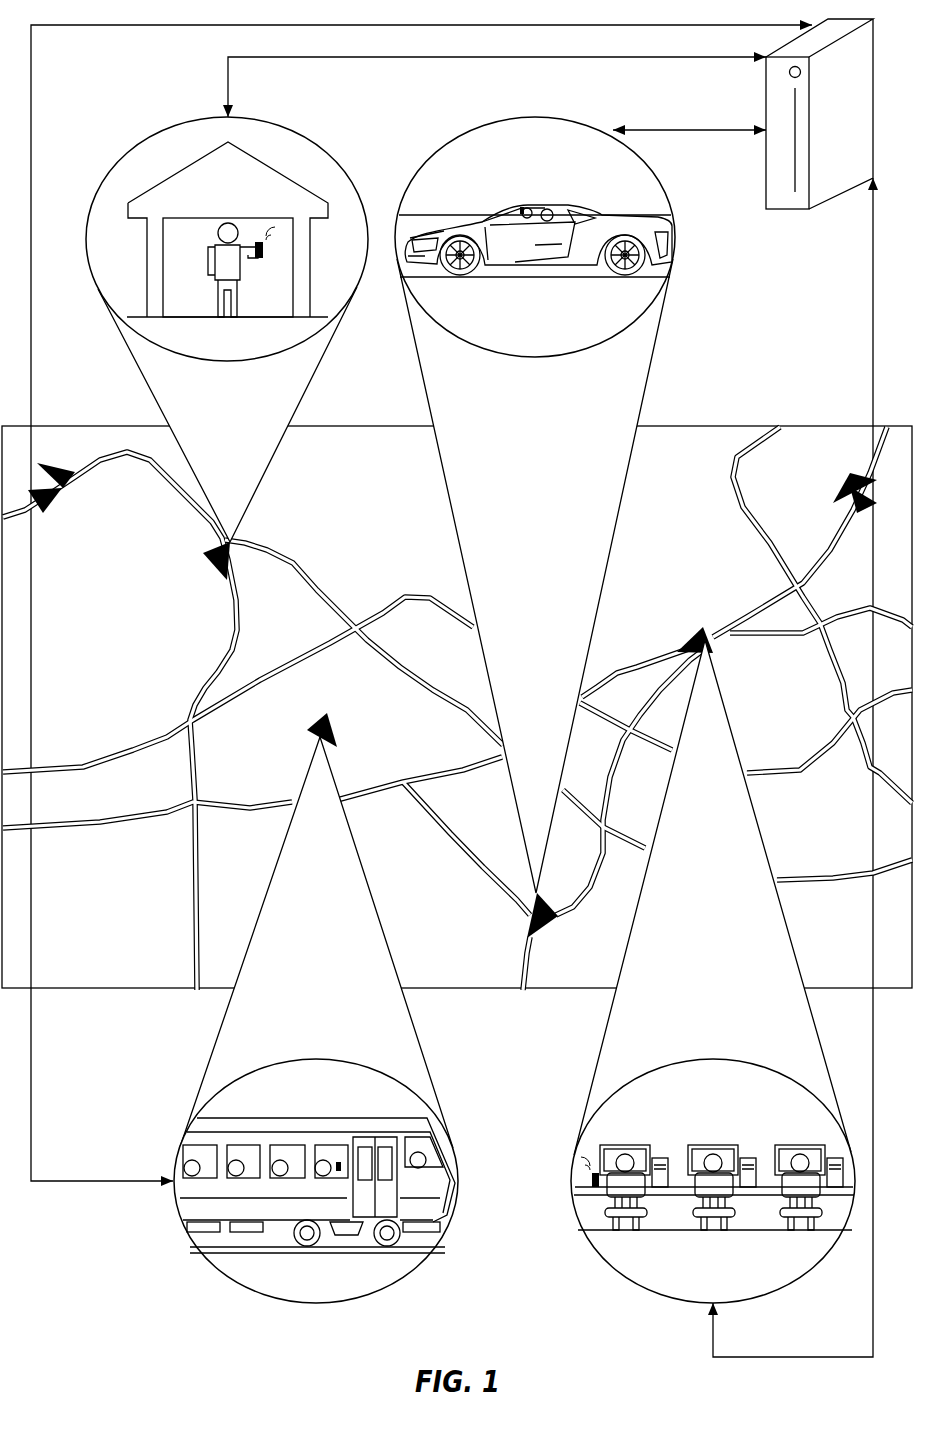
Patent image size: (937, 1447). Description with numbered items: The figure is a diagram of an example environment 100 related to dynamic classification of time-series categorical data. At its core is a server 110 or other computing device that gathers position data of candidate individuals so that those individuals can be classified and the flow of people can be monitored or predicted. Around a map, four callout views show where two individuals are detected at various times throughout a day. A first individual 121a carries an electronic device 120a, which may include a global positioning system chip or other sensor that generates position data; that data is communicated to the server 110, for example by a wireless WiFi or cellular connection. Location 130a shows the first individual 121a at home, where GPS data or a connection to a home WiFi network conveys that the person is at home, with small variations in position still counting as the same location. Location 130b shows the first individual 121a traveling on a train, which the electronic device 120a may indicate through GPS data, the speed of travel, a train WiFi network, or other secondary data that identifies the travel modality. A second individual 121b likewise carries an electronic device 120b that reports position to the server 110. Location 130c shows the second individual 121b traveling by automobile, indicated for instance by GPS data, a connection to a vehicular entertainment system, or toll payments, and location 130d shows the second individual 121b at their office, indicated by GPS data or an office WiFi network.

The environment 100 is at (115, 1319).
The server 110 is at (807, 209).
The electronic device 120a is at (262, 250).
The first individual 121a is at (210, 258).
The electronic device 120b is at (532, 205).
The second individual 121b is at (560, 209).
The location 130a is at (333, 150).
The location 130b is at (212, 1265).
The location 130c is at (676, 232).
The location 130d is at (610, 1265).